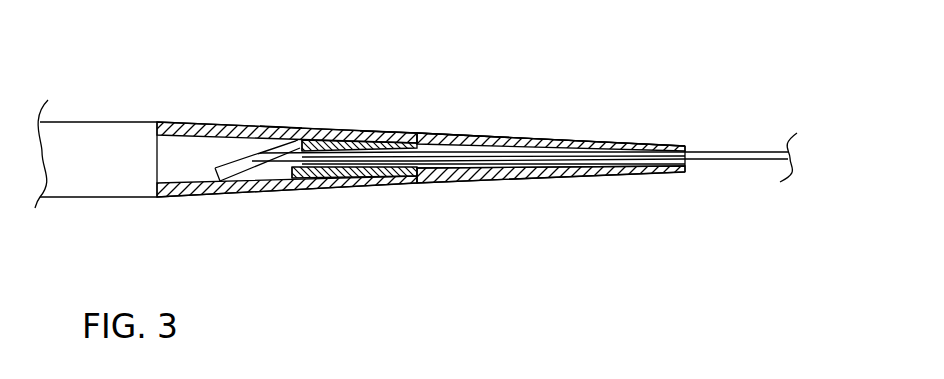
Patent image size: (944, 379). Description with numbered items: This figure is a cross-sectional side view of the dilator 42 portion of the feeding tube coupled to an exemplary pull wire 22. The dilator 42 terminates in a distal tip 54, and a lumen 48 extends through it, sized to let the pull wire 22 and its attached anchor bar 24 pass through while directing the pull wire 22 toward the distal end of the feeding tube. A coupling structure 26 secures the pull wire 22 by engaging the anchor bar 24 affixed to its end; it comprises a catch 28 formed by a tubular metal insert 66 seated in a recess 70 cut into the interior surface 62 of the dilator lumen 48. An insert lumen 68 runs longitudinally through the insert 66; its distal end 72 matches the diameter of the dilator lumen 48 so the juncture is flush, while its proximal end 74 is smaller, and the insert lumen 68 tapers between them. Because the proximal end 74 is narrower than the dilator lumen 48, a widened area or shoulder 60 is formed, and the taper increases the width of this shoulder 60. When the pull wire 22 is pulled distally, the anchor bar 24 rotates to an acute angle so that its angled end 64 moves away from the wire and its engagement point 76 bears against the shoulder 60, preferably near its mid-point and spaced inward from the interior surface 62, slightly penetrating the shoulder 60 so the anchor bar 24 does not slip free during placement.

The pull wire 22 is at (723, 158).
The anchor bar 24 is at (242, 163).
The coupling structure 26 is at (358, 112).
The catch 28 is at (317, 128).
The dilator 42 is at (483, 133).
The lumen 48 is at (560, 133).
The distal tip 54 is at (673, 145).
The shoulder 60 is at (284, 168).
The interior surface 62 is at (219, 127).
The end of the anchor bar 64 is at (278, 127).
The tubular metal insert 66 is at (393, 133).
The insert lumen 68 is at (398, 182).
The recess 70 is at (417, 132).
The distal end of the insert lumen 72 is at (420, 177).
The proximal end of the insert lumen 74 is at (305, 168).
The engagement point 76 is at (298, 128).